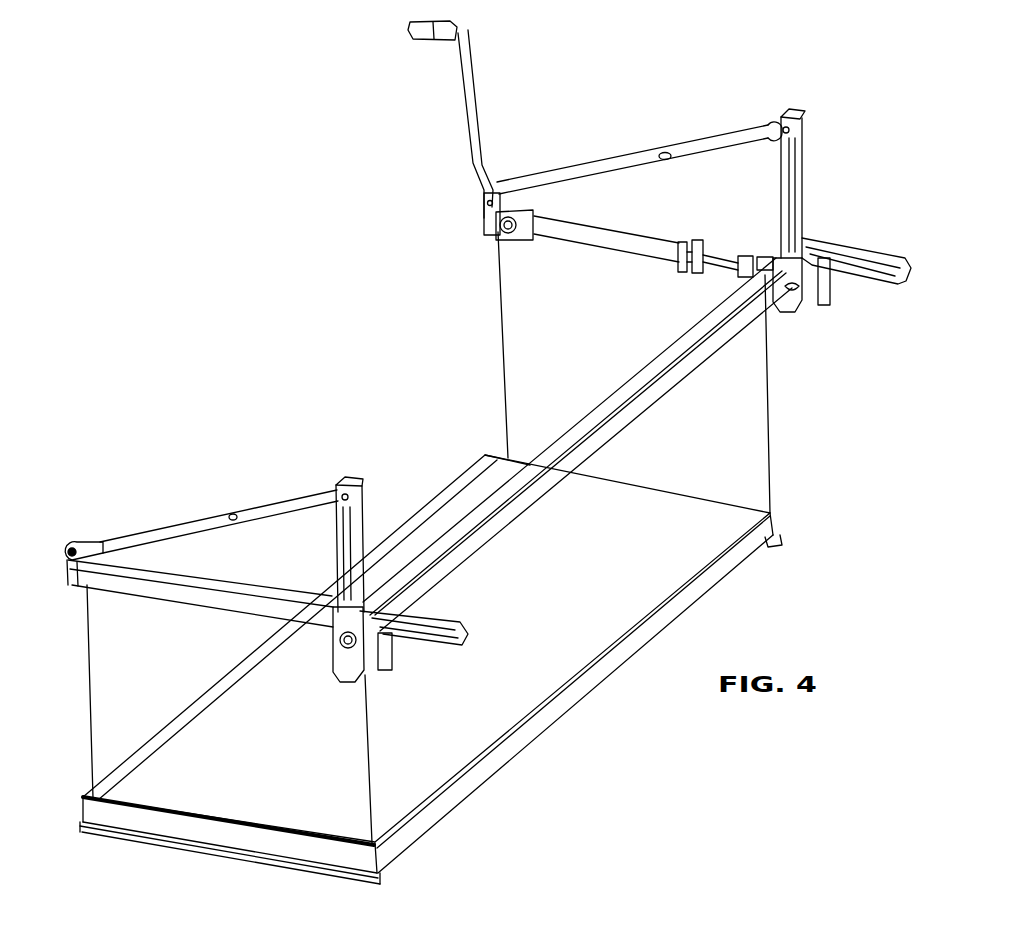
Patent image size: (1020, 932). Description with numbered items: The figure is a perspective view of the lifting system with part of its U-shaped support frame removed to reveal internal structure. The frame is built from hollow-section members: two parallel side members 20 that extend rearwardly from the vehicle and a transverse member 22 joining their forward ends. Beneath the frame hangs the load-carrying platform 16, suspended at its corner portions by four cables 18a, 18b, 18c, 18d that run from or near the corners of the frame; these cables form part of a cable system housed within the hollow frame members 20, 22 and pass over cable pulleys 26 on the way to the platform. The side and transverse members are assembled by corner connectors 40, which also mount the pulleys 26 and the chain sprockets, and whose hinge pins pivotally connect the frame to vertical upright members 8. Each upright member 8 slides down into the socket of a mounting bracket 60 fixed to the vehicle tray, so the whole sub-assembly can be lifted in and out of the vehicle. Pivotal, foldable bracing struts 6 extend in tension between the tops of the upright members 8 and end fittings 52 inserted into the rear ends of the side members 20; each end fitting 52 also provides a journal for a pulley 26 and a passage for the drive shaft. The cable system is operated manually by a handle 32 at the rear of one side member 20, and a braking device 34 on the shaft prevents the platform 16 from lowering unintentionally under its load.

The load-carrying platform 16 is at (575, 746).
The cable 18a is at (505, 323).
The cable 18b is at (769, 405).
The cable 18c is at (373, 746).
The cable 18d is at (95, 673).
The transverse frame member 22 is at (660, 385).
The upright member 8 is at (364, 498).
The corner connector 40 is at (768, 300).
The mounting bracket 60 is at (430, 648).
The side frame member 20 is at (202, 577).
The bracing strut 6 is at (278, 505).
The end fitting 52 is at (72, 578).
The handle 32 is at (476, 100).
The cable pulley 26 is at (510, 238).
The braking device 34 is at (700, 244).